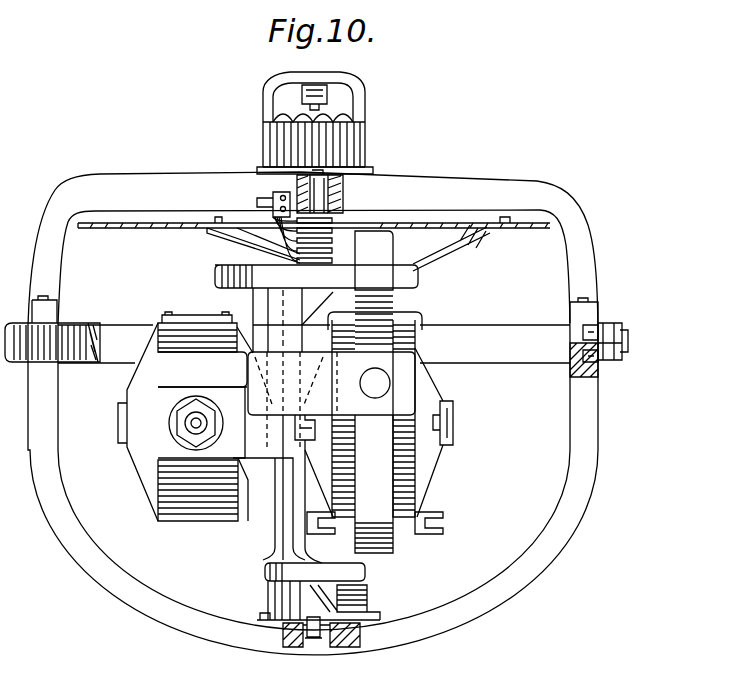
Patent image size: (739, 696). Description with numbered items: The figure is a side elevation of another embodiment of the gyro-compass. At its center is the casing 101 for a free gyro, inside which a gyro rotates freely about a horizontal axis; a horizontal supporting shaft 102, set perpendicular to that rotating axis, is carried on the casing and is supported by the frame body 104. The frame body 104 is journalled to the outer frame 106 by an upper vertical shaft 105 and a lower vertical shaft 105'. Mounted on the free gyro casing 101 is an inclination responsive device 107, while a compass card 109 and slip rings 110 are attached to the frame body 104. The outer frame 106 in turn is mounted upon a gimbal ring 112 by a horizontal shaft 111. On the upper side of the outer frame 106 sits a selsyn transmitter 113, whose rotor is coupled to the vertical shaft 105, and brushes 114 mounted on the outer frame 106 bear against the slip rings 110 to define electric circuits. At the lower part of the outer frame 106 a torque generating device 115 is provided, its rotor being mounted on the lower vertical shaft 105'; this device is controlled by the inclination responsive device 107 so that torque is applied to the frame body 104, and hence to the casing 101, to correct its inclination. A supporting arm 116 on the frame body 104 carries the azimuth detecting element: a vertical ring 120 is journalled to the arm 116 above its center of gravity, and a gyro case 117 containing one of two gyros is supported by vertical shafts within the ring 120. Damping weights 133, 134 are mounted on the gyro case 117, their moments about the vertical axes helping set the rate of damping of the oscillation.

The casing for a free gyro 101 is at (152, 498).
The horizontal supporting shaft 102 is at (190, 426).
The frame body 104 is at (258, 298).
The vertical shaft 105 is at (343, 191).
The lower vertical shaft 105' is at (321, 644).
The outer frame 106 is at (478, 185).
The inclination responsive device 107 is at (182, 312).
The compass card 109 is at (152, 229).
The slip rings 110 is at (305, 227).
The horizontal shaft 111 is at (606, 326).
The gimbal ring 112 is at (77, 330).
The selsyn transmitter 113 is at (355, 148).
The brushes 114 is at (250, 250).
The torque generating device 115 is at (272, 596).
The supporting arm 116 is at (383, 412).
The gyro case 117 is at (432, 462).
The vertical ring 120 is at (394, 547).
The damping weight 133 is at (455, 412).
The damping weight 134 is at (312, 438).